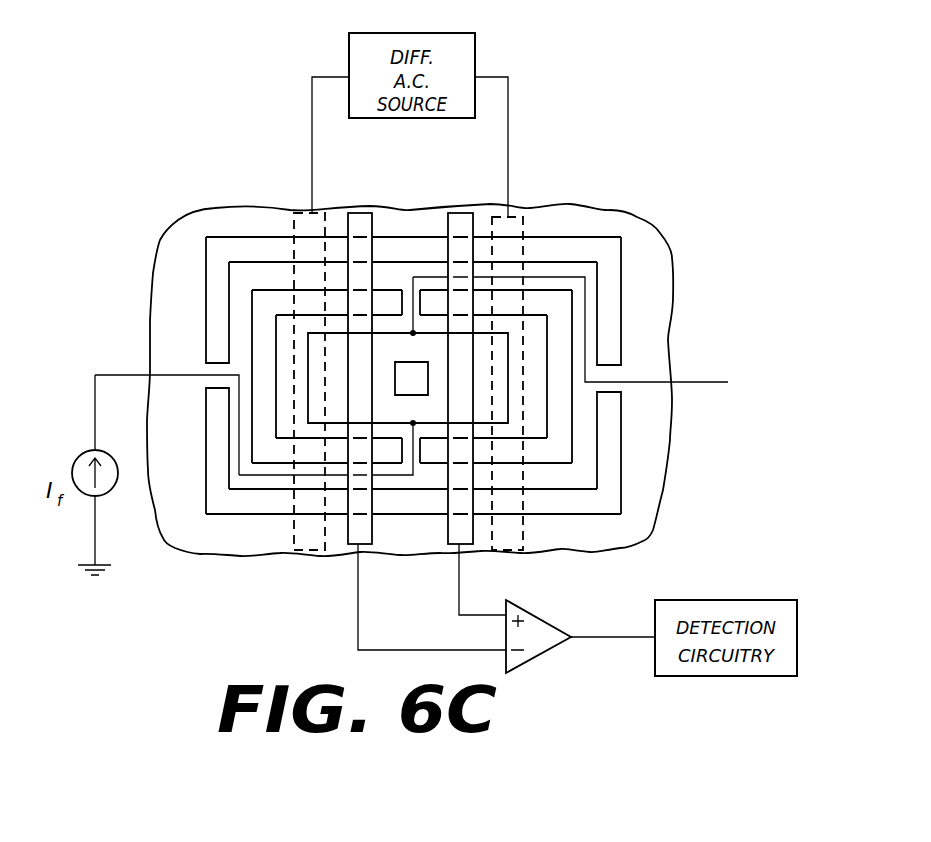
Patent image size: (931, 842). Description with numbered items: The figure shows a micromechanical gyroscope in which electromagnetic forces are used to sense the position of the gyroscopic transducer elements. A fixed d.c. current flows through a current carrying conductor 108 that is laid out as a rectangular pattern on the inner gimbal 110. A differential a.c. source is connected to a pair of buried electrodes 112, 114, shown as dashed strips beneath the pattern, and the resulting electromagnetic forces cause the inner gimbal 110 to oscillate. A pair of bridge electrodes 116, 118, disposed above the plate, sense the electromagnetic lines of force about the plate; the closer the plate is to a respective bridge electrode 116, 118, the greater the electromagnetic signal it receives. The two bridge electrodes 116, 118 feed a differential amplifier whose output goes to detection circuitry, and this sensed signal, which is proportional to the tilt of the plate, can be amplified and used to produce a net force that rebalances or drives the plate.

The current carrying conductor 108 is at (265, 476).
The inner gimbal 110 is at (538, 328).
The buried electrode 112 is at (513, 213).
The buried electrode 114 is at (302, 208).
The bridge electrode 116 is at (358, 213).
The bridge electrode 118 is at (462, 213).